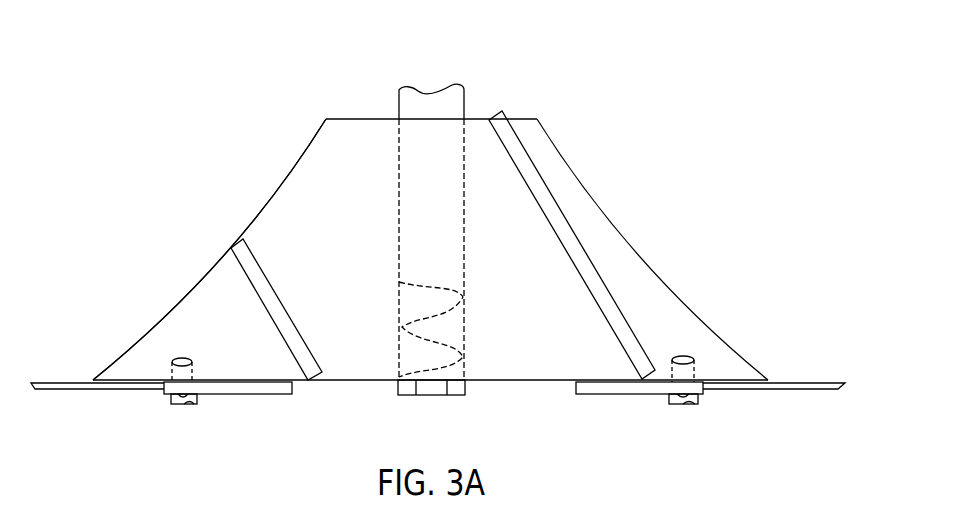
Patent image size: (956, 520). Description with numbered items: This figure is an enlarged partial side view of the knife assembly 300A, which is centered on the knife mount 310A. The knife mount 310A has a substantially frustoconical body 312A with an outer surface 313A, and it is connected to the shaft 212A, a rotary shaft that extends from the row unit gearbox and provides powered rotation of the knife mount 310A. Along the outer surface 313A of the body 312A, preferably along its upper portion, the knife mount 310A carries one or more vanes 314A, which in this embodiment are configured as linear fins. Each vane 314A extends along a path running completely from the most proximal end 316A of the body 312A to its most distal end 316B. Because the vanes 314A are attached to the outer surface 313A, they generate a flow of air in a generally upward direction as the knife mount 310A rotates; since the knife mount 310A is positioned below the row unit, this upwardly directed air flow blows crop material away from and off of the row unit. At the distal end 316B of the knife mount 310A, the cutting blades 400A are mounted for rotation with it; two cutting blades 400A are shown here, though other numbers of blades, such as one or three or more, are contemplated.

The knife assembly 300A is at (697, 74).
The shaft 212A is at (452, 100).
The knife mount 310A is at (205, 182).
The body 312A is at (203, 272).
The outer surface 313A is at (207, 317).
The vanes 314A is at (254, 257).
The proximal end 316A is at (303, 128).
The distal end 316B is at (109, 331).
The cutting blades 400A is at (814, 384).